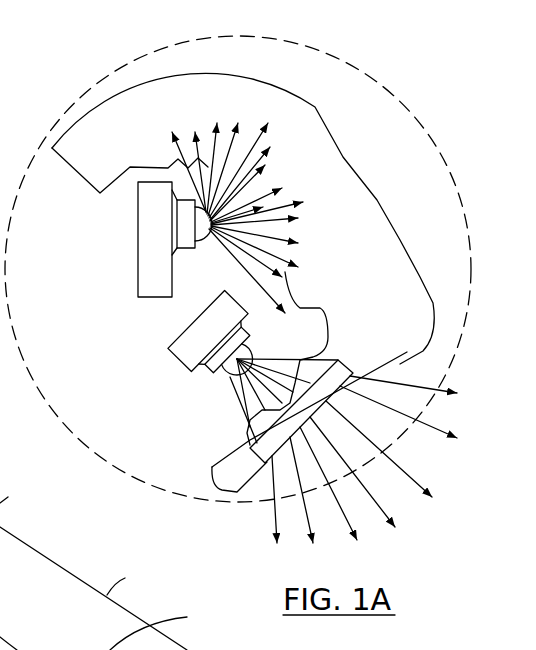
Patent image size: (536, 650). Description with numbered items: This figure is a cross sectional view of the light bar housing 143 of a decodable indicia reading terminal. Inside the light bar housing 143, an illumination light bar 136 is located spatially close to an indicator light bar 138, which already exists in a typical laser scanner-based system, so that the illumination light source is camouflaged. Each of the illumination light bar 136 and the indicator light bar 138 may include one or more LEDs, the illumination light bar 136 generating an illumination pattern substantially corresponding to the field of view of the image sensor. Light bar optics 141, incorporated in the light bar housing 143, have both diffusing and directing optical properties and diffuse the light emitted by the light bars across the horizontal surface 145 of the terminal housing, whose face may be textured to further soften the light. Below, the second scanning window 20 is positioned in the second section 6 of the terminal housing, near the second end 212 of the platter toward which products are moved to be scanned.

The light bar housing 143 is at (315, 107).
The indicator light bar 138 is at (138, 270).
The illumination light bar 136 is at (178, 358).
The light bar optics 141 is at (340, 364).
The horizontal surface 145 is at (20, 570).
The second scanning window 20 is at (16, 495).
The second section 6 is at (128, 582).
The second end 212 is at (117, 628).